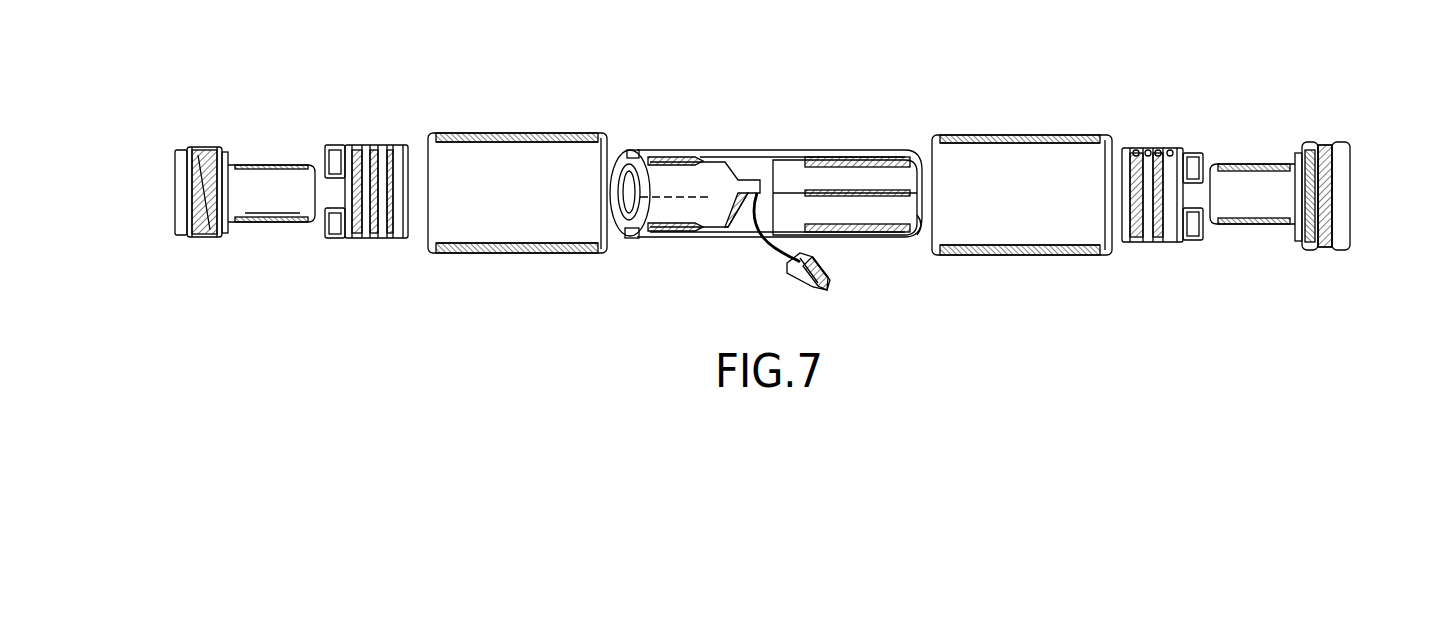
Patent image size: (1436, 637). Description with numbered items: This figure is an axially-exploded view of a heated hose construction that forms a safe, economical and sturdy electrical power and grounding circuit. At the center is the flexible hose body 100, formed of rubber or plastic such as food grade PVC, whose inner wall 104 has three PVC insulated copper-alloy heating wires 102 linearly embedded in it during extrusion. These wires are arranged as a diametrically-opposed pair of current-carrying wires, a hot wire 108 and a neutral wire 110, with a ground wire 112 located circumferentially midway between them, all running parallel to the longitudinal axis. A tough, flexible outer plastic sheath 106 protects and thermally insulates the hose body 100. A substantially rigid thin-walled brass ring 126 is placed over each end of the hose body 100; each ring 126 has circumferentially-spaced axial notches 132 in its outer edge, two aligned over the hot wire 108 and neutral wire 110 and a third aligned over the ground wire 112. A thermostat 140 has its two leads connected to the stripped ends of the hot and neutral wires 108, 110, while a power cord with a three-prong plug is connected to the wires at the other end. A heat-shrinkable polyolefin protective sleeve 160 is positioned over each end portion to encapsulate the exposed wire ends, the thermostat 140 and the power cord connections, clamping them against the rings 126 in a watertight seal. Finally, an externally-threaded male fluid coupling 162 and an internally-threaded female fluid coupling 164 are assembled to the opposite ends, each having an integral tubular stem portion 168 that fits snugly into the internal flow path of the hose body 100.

The flexible hose body 100 is at (737, 150).
The heating wires 102 is at (633, 153).
The inner wall 104 is at (650, 233).
The outer plastic sheath 106 is at (628, 235).
The hot wire 108 is at (890, 158).
The neutral wire 110 is at (873, 235).
The ground wire 112 is at (690, 193).
The ring 126 is at (357, 150).
The axial notches 132 is at (325, 150).
The thermostat 140 is at (750, 190).
The protective sleeve 160 is at (515, 255).
The male fluid coupling 162 is at (183, 200).
The female fluid coupling 164 is at (1343, 140).
The stem portion 168 is at (268, 183).